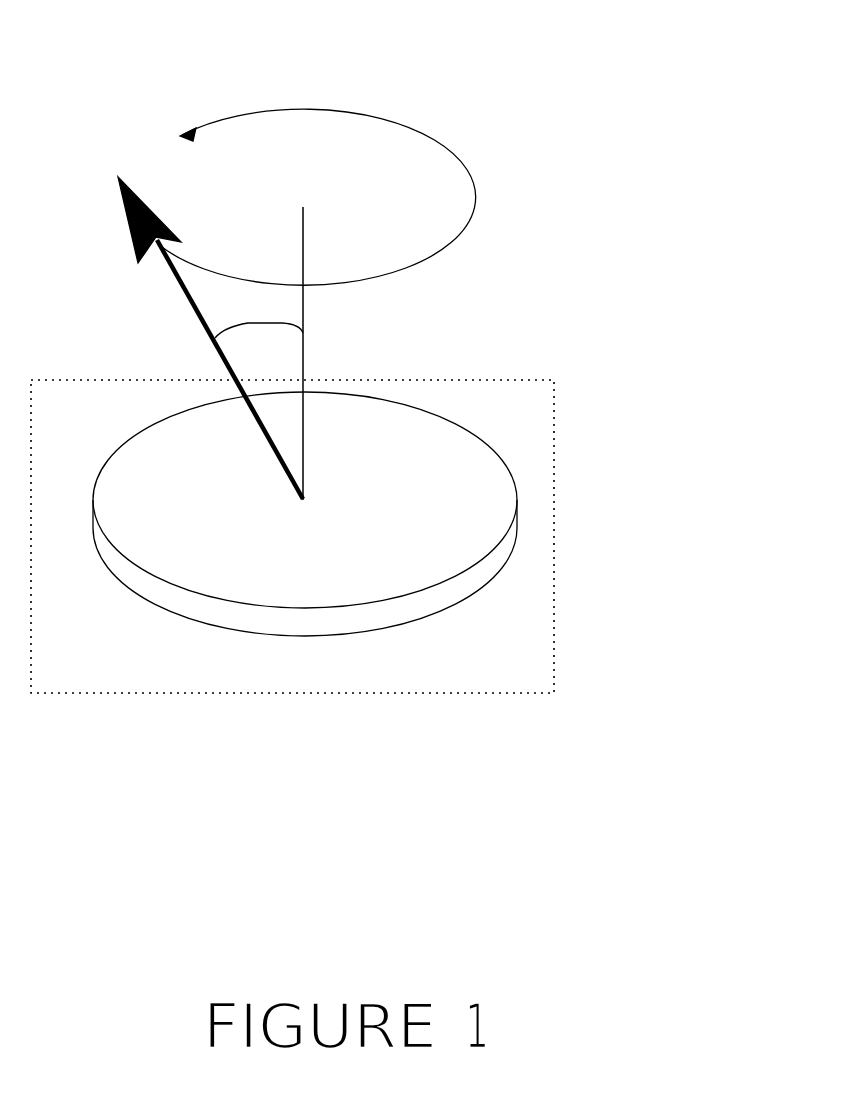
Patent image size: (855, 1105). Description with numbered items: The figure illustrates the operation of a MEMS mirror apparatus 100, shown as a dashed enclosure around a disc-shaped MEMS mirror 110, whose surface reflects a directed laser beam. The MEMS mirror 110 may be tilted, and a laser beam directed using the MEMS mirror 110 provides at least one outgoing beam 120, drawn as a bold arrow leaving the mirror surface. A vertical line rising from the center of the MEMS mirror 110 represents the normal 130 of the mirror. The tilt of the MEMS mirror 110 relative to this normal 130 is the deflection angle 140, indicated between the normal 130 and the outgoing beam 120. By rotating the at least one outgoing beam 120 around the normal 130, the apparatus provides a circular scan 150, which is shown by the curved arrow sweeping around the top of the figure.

The MEMS mirror apparatus 100 is at (513, 385).
The MEMS mirror 110 is at (228, 557).
The outgoing beam 120 is at (230, 384).
The normal 130 is at (303, 240).
The deflection angle 140 is at (244, 323).
The circular scan 150 is at (438, 138).